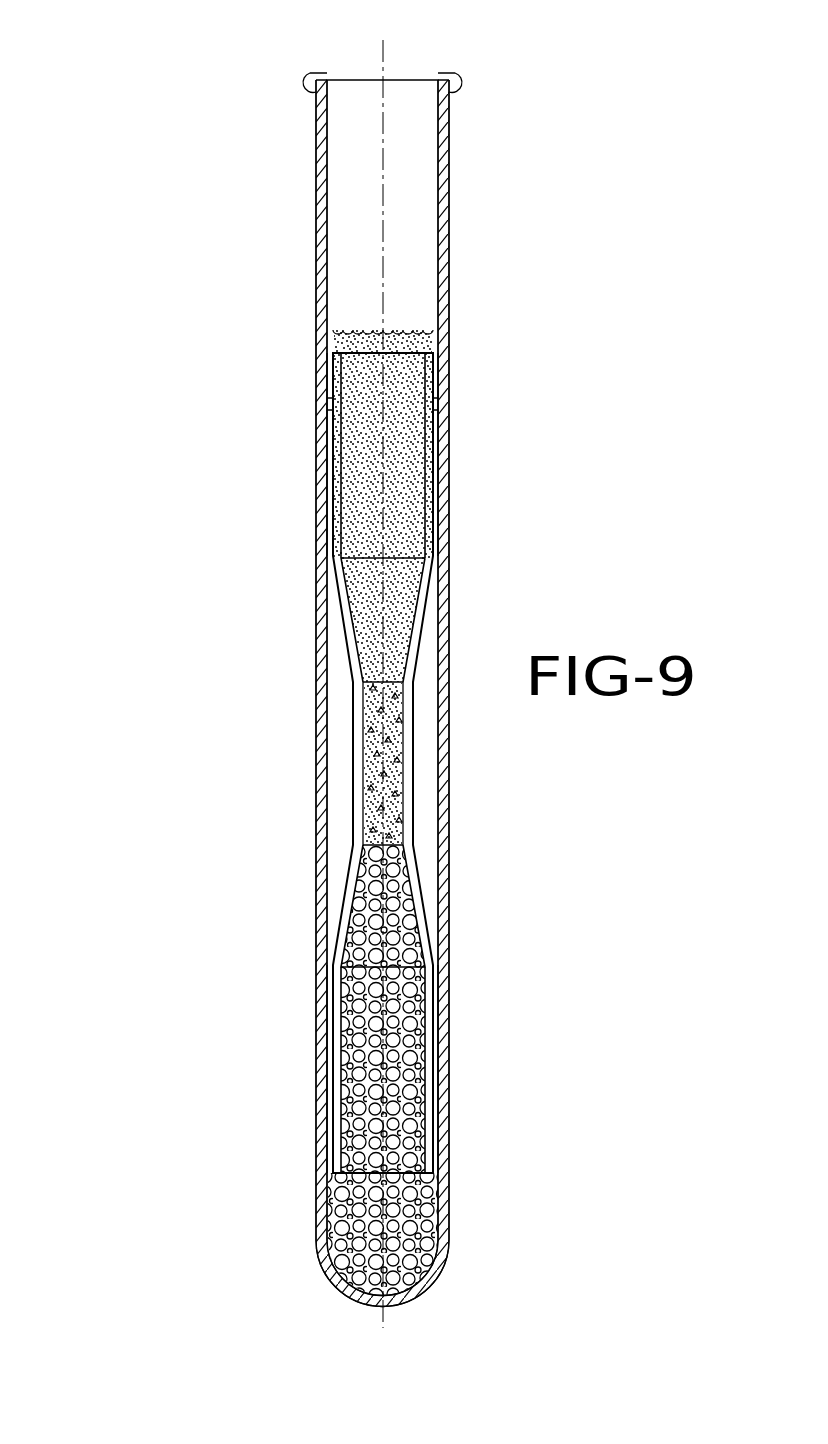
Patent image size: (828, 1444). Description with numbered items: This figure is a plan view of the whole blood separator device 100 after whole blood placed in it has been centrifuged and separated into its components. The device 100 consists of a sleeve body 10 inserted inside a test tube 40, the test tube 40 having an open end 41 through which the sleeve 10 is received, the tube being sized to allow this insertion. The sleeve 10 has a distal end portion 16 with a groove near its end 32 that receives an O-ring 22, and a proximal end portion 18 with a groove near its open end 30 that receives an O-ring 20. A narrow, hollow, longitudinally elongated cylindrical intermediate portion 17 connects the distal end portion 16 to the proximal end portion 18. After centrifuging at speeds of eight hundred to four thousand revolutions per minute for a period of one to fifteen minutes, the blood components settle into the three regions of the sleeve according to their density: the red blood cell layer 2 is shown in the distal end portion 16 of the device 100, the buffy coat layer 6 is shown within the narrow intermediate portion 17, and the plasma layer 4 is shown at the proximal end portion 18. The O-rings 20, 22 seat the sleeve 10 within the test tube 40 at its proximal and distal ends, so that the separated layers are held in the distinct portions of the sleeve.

The whole blood separator device 100 is at (184, 897).
The test tube 40 is at (326, 675).
The open end 41 is at (350, 73).
The open end 30 is at (412, 353).
The O-ring 20 is at (438, 398).
The proximal end portion 18 is at (435, 492).
The plasma layer 4 is at (358, 515).
The sleeve body 10 is at (348, 729).
The intermediate portion 17 is at (407, 760).
The buffy coat layer 6 is at (372, 790).
The red blood cell layer 2 is at (358, 1057).
The distal end portion 16 is at (435, 1035).
The O-ring 22 is at (438, 1125).
The end 32 is at (412, 1173).